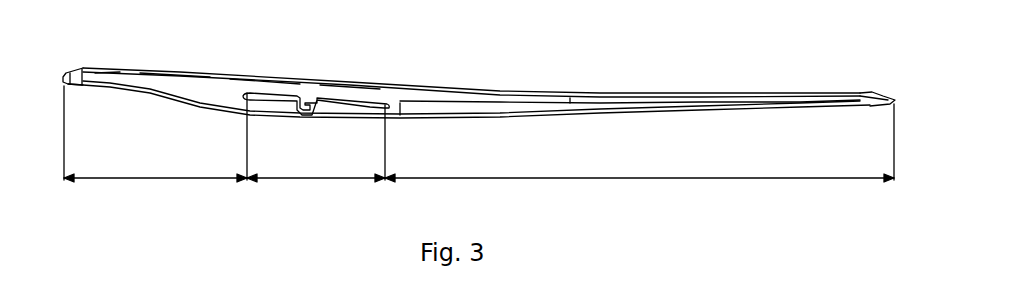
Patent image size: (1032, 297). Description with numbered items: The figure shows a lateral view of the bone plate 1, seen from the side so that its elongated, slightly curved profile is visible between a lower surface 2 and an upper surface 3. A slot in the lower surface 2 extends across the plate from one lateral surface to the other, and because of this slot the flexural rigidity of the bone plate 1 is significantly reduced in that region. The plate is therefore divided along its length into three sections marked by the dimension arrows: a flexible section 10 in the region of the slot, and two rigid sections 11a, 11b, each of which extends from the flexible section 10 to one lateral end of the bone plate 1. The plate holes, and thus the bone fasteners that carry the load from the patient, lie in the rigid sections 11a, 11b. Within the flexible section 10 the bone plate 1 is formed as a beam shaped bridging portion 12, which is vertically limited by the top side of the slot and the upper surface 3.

The bone plate 1 is at (758, 37).
The lower surface 2 is at (500, 118).
The upper surface 3 is at (483, 85).
The flexible section 10 is at (316, 164).
The rigid section 11a is at (639, 164).
The rigid section 11b is at (155, 164).
The bridging portion 12 is at (315, 80).